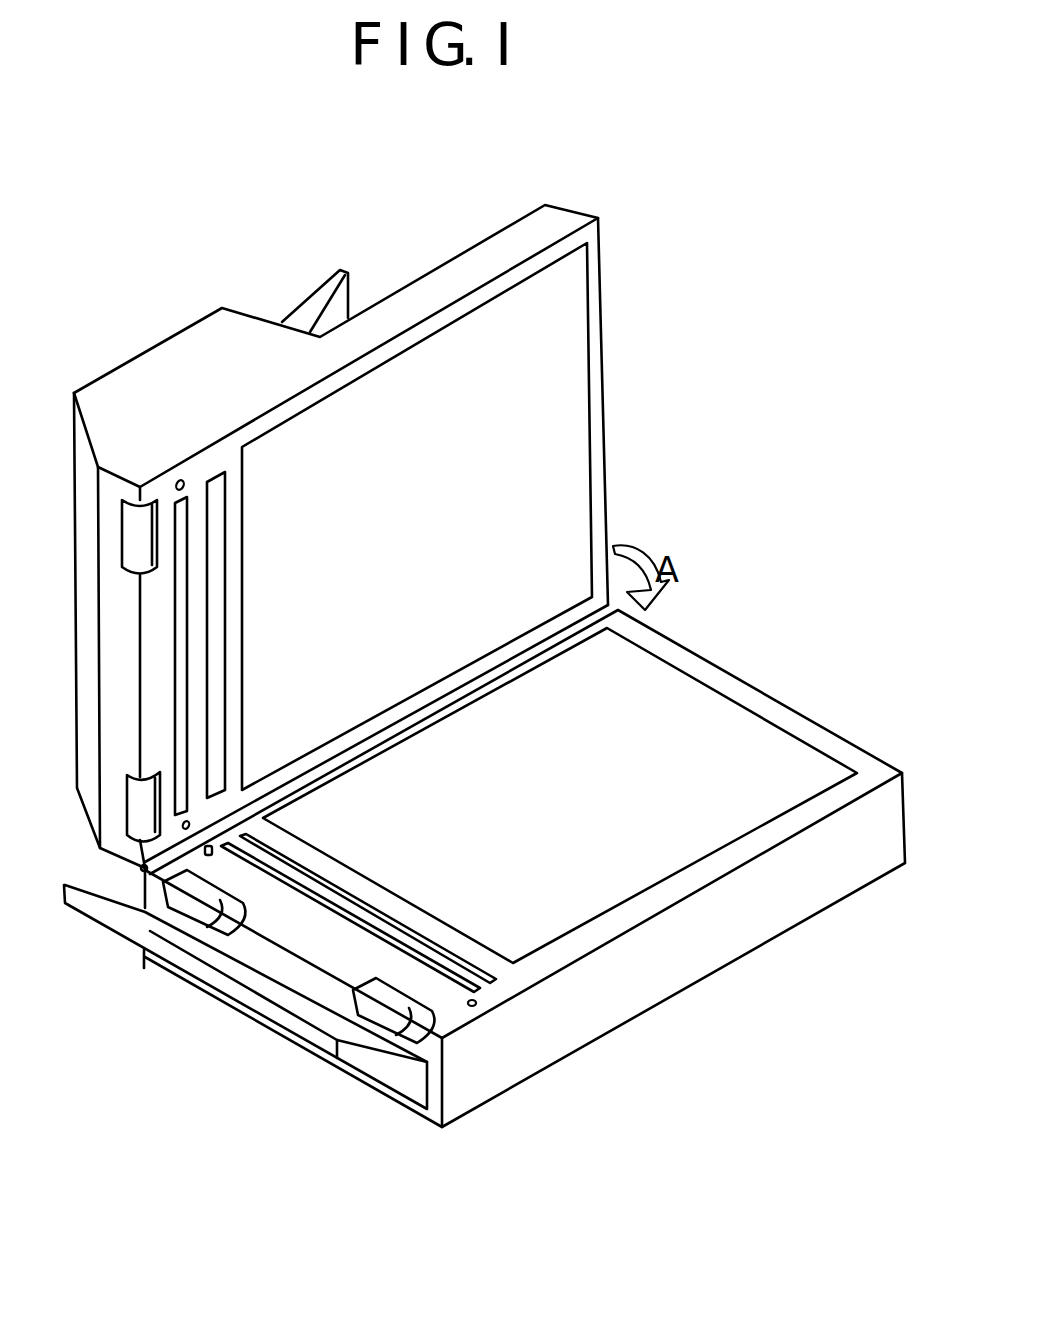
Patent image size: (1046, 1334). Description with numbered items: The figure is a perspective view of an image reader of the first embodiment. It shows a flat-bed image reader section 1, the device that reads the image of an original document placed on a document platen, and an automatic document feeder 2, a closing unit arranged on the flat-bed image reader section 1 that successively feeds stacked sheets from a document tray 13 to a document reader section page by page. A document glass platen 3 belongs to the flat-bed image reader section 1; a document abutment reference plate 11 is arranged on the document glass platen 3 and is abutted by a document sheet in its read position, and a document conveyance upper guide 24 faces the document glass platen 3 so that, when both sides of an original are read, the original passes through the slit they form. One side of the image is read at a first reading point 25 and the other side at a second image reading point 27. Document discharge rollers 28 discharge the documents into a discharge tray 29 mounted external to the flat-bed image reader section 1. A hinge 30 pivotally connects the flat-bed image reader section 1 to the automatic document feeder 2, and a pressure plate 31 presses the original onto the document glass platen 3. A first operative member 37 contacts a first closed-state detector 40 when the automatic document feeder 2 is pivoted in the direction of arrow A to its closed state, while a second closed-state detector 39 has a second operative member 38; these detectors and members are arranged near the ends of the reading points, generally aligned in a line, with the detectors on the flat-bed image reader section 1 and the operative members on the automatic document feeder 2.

The flat-bed image reader section 1 is at (657, 1003).
The automatic document feeder 2 is at (607, 398).
The document glass platen 3 is at (645, 672).
The document abutment reference plate 11 is at (493, 982).
The document tray 13 is at (318, 288).
The document conveyance upper guide 24 is at (225, 510).
The first reading point 25 is at (475, 994).
The second image reading point 27 is at (188, 630).
The document discharge rollers 28 is at (138, 832).
The discharge tray 29 is at (378, 1066).
The hinge 30 is at (142, 874).
The pressure plate 31 is at (550, 510).
The first operative member 37 is at (181, 479).
The second operative member 38 is at (190, 820).
The second closed-state detector 39 is at (212, 846).
The first closed-state detector 40 is at (472, 1006).